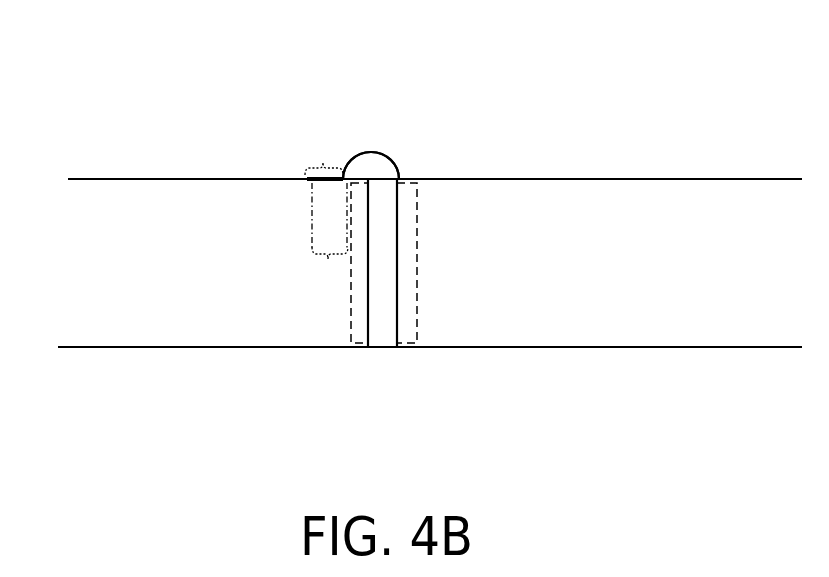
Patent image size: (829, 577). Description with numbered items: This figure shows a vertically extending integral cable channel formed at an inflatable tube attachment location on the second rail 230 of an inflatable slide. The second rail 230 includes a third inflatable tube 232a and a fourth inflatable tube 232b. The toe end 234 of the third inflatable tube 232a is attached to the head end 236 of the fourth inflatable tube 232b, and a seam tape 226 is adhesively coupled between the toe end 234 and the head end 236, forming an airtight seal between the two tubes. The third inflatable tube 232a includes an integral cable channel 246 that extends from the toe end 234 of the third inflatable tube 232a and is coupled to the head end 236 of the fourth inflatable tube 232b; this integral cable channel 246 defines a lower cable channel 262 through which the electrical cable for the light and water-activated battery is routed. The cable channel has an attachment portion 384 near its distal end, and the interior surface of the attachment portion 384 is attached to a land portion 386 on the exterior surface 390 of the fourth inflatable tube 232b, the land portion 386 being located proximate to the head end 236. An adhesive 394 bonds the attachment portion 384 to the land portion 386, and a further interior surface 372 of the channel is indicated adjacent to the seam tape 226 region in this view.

The second rail 230 is at (96, 121).
The third inflatable tube 232a is at (528, 198).
The fourth inflatable tube 232b is at (163, 189).
The attachment portion 384 is at (324, 144).
The adhesive 394 is at (328, 183).
The land portion 386 is at (327, 236).
The integral cable channel 246 is at (370, 153).
The lower cable channel 262 is at (384, 164).
The seam tape 226 is at (383, 238).
The toe end 234 is at (383, 290).
The head end 236 is at (369, 328).
The exterior surface 390 is at (157, 291).
The second region 372 is at (670, 289).